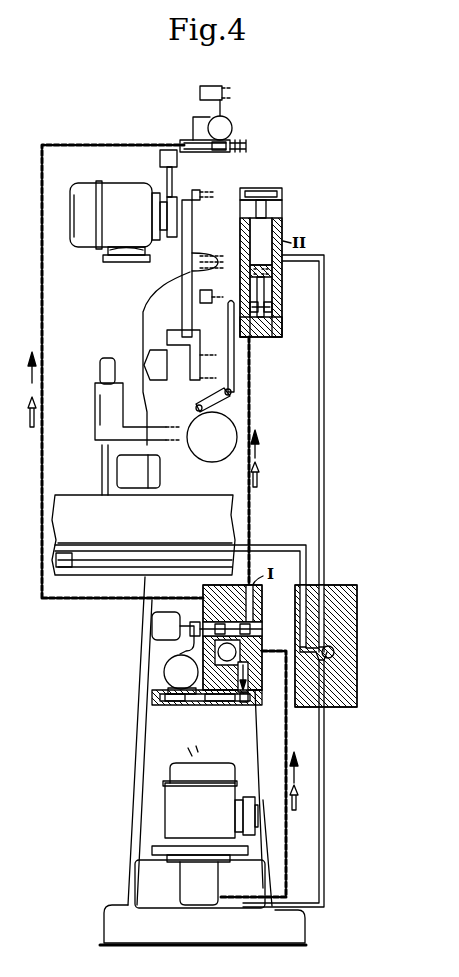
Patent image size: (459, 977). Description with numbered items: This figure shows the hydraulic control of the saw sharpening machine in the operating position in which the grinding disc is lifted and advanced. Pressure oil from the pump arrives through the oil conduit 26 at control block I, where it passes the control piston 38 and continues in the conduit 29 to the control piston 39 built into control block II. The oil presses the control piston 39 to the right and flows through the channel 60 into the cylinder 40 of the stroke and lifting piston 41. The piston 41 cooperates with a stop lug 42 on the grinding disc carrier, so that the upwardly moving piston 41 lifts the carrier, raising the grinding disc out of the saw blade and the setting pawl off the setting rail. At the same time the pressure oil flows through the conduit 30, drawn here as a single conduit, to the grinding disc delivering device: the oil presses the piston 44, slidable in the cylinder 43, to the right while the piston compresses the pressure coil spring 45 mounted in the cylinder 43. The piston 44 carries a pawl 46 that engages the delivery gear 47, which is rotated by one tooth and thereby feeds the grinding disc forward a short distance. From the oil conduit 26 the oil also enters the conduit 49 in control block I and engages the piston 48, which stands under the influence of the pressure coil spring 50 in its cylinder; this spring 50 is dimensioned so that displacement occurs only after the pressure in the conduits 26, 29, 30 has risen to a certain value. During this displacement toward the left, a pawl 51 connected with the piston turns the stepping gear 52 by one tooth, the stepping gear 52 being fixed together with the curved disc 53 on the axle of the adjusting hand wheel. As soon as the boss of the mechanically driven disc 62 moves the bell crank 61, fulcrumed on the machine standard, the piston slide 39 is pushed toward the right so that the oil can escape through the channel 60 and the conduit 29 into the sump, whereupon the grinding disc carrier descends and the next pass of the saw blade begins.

The oil conduit 26 is at (287, 849).
The conduit 29 is at (249, 499).
The conduit 30 is at (41, 278).
The control piston 38 is at (241, 619).
The control piston 39 is at (268, 328).
The cylinder 40 is at (262, 270).
The stroke and lifting piston 41 is at (265, 226).
The stop lug 42 is at (262, 190).
The cylinder 43 is at (185, 141).
The piston 44 is at (197, 151).
The pressure coil spring 45 is at (234, 141).
The pawl 46 is at (223, 151).
The delivery gear 47 is at (221, 122).
The piston 48 is at (262, 690).
The conduit 49 is at (225, 700).
The pressure coil spring 50 is at (153, 695).
The pawl 51 is at (177, 700).
The stepping gear 52 is at (165, 677).
The curved disc 53 is at (172, 661).
The channel 60 is at (264, 292).
The bell crank 61 is at (236, 375).
The mechanically driven disc 62 is at (235, 425).